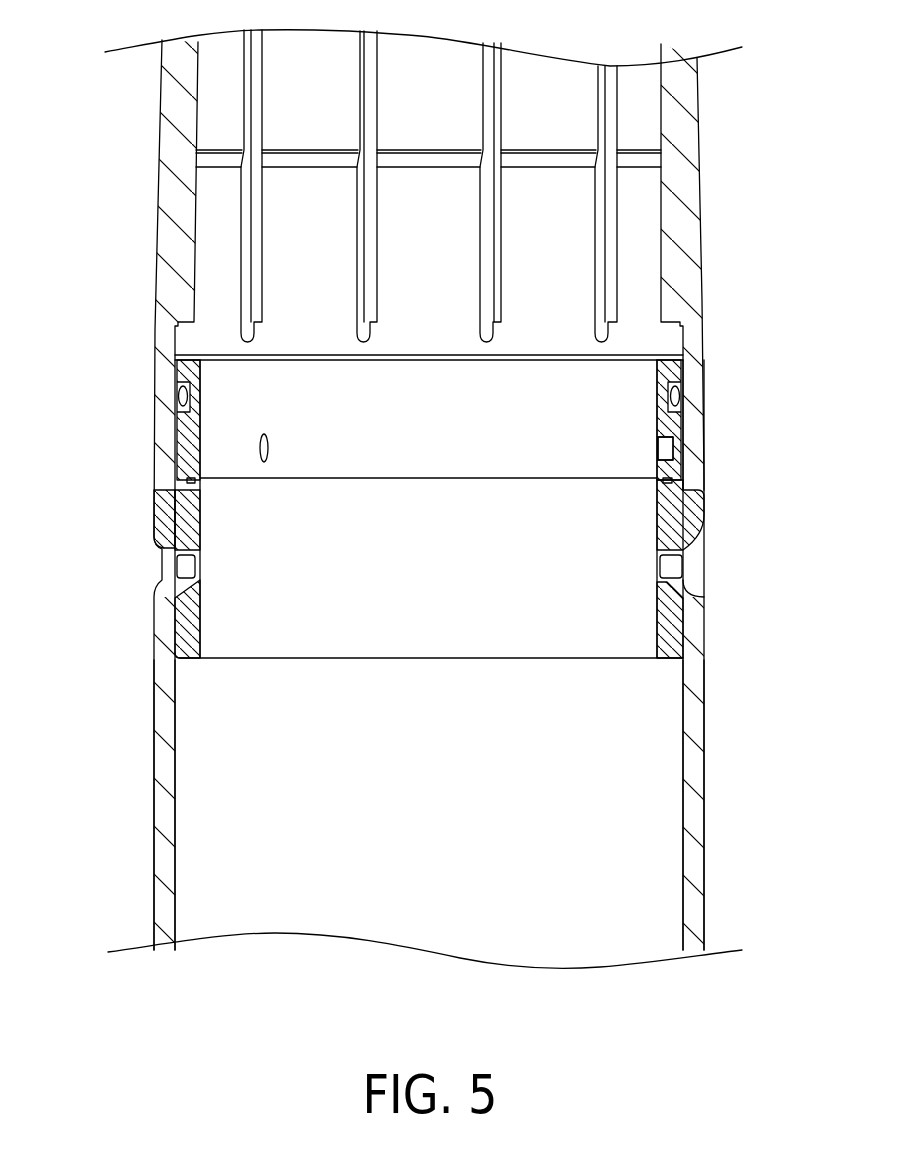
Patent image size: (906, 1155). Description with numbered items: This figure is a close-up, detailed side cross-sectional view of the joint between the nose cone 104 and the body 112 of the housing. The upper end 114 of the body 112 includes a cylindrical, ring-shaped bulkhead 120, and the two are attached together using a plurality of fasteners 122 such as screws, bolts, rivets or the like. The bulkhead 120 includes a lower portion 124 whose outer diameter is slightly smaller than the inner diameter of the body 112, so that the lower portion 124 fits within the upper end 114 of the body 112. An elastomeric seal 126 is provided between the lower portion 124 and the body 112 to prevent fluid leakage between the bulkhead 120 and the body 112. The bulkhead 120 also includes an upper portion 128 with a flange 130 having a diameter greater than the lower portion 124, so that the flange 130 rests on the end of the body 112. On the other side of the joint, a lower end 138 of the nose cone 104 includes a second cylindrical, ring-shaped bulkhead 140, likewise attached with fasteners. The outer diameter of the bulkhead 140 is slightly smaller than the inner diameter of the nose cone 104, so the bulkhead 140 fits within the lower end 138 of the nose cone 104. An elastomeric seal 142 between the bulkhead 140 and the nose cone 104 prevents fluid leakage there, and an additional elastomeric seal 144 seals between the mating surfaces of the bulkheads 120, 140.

The nose cone 104 is at (692, 204).
The body 112 is at (695, 852).
The upper end 114 is at (695, 632).
The bulkhead 120 is at (160, 536).
The fasteners 122 is at (172, 568).
The lower portion 124 is at (700, 594).
The elastomeric seal 126 is at (187, 620).
The upper portion 128 is at (157, 512).
The flange 130 is at (700, 514).
The lower end 138 is at (688, 420).
The bulkhead 140 is at (188, 455).
The elastomeric seal 142 is at (177, 392).
The elastomeric seal 144 is at (672, 476).